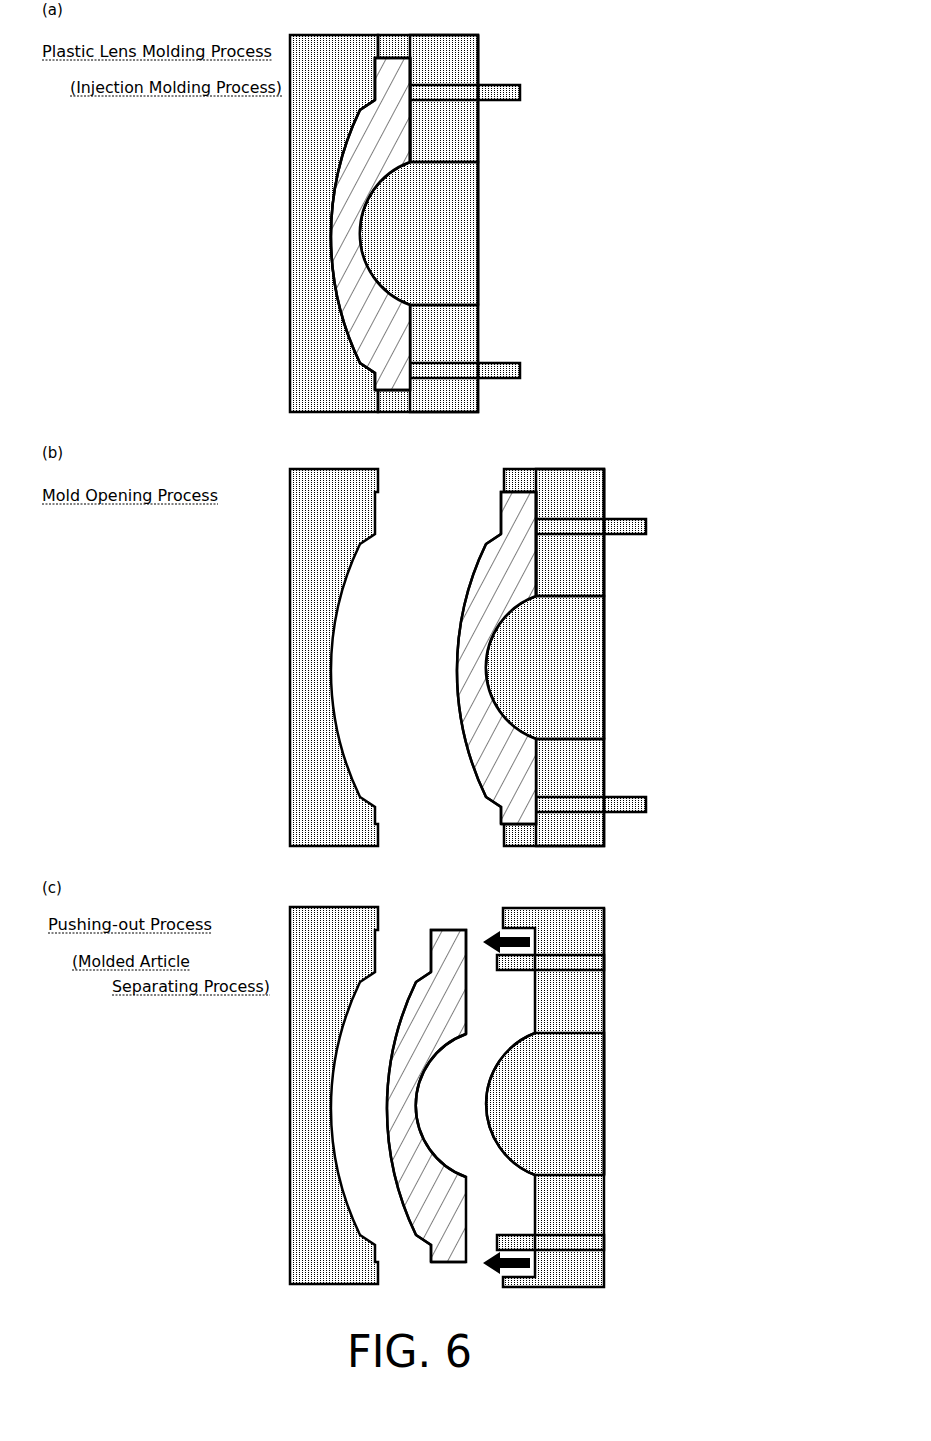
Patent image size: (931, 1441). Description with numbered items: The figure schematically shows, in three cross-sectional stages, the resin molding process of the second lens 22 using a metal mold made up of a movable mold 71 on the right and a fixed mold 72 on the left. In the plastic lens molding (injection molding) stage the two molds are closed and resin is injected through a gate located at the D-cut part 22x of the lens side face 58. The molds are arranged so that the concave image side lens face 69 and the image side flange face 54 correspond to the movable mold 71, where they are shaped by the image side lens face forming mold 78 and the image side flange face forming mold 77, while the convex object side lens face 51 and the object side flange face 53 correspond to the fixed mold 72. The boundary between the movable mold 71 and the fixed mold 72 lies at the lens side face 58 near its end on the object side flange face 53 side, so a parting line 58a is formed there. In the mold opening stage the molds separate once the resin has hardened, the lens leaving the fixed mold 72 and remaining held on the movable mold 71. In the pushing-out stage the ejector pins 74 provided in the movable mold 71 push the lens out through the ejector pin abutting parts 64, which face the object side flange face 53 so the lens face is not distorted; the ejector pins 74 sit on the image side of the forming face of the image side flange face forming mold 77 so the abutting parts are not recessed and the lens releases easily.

The second lens 22 is at (352, 163).
The D-cut part 22x is at (413, 389).
The object side lens face 51 is at (331, 247).
The object side flange face 53 is at (373, 386).
The image side flange face 54 is at (415, 150).
The lens side face 58 is at (390, 58).
The parting line 58a is at (377, 53).
The ejector pin abutting part 64 is at (481, 53).
The image side lens face 69 is at (382, 277).
The movable mold 71 is at (537, 669).
The fixed mold 72 is at (282, 207).
The ejector pin 74 is at (502, 85).
The image side flange face forming mold 77 is at (482, 130).
The image side lens face forming mold 78 is at (481, 257).